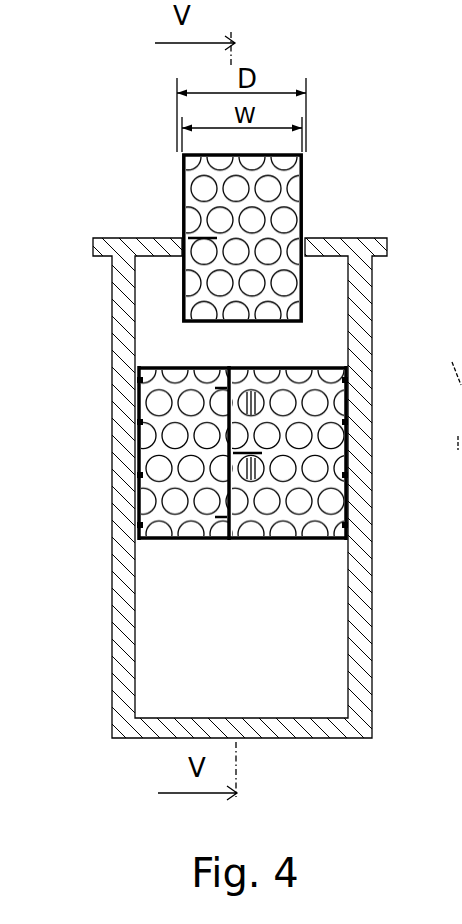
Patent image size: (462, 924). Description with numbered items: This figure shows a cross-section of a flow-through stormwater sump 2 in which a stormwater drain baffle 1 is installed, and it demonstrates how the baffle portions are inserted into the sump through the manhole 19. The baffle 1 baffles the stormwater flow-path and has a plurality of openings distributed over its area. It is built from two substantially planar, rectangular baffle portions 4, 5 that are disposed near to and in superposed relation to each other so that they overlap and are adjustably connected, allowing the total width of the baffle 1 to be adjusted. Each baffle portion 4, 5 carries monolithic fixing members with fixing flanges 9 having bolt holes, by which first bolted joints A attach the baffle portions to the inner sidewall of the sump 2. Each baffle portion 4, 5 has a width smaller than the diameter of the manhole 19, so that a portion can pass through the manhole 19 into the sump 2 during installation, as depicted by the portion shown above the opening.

The stormwater drain baffle 1 is at (236, 503).
The stormwater sump 2 is at (120, 600).
The baffle portion 4 is at (177, 520).
The baffle portion 5 is at (294, 518).
The fixing flange 9 is at (140, 447).
The manhole 19 is at (305, 238).
The first bolted joint A is at (138, 423).